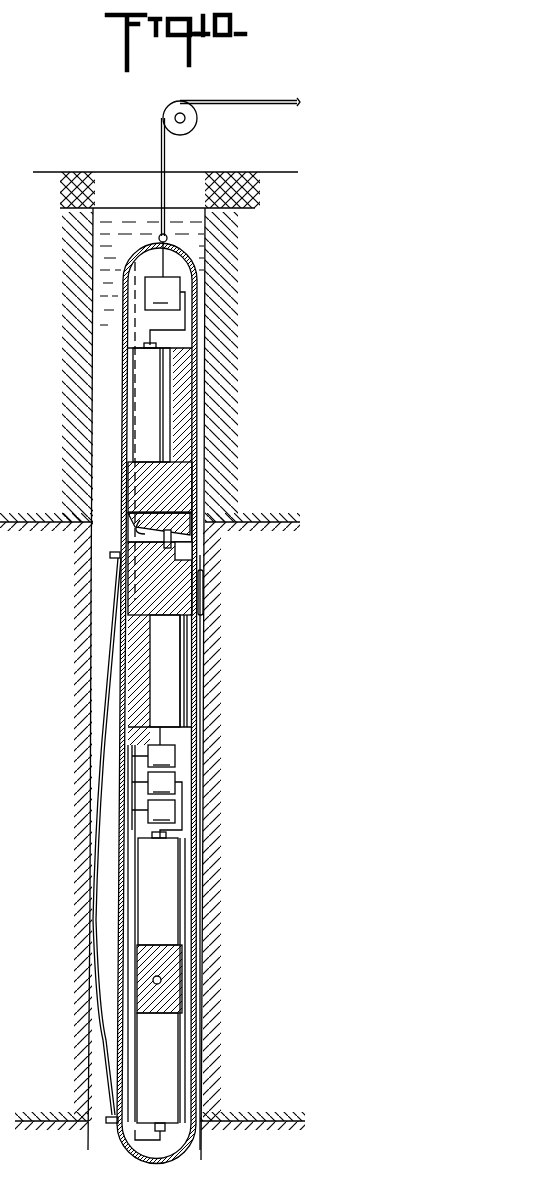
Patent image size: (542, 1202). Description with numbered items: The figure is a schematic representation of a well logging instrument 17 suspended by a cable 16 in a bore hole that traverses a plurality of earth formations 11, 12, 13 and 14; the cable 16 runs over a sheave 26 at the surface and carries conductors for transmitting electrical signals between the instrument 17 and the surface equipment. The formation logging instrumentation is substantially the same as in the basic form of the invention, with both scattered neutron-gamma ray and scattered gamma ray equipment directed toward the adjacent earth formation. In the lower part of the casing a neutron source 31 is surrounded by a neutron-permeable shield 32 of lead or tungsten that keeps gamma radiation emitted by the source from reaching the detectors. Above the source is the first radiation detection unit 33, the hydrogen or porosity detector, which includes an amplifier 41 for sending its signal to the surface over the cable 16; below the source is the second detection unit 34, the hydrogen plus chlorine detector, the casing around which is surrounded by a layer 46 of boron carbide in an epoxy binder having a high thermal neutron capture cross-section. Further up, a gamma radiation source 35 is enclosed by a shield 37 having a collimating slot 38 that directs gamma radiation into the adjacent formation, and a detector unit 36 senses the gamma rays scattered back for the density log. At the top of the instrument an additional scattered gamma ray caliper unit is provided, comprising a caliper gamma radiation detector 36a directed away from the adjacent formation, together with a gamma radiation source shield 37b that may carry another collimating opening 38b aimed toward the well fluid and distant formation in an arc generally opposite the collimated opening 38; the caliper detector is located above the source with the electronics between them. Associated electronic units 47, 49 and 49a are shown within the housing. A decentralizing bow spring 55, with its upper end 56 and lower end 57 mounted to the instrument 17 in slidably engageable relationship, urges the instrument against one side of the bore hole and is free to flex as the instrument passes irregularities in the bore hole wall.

The earth formation 11 is at (49, 197).
The earth formation 12 is at (46, 297).
The earth formation 13 is at (44, 654).
The earth formation 14 is at (43, 1154).
The cable 16 is at (166, 160).
The well logging instrument 17 is at (192, 253).
The sheave 26 is at (197, 123).
The neutron source 31 is at (160, 982).
The neutron-permeable shield 32 is at (173, 962).
The first radiation detection unit 33 is at (183, 885).
The second detection unit 34 is at (183, 1058).
The gamma radiation source 35 is at (177, 530).
The detector unit 36 is at (192, 678).
The caliper gamma radiation detector unit 36a is at (155, 397).
The shield 37 is at (163, 595).
The gamma radiation source shield 37b is at (162, 483).
The collimating slot 38 is at (180, 558).
The collimating opening 38b is at (147, 528).
The amplifier 41 is at (161, 783).
The layer 46 is at (197, 1083).
The transmitter 47 is at (161, 811).
The recorder 49 is at (161, 756).
The upper recorder 49a is at (164, 312).
The decentralizing bow spring 55 is at (110, 681).
The upper end of bow spring 56 is at (117, 562).
The lower end of bow spring 57 is at (115, 1120).